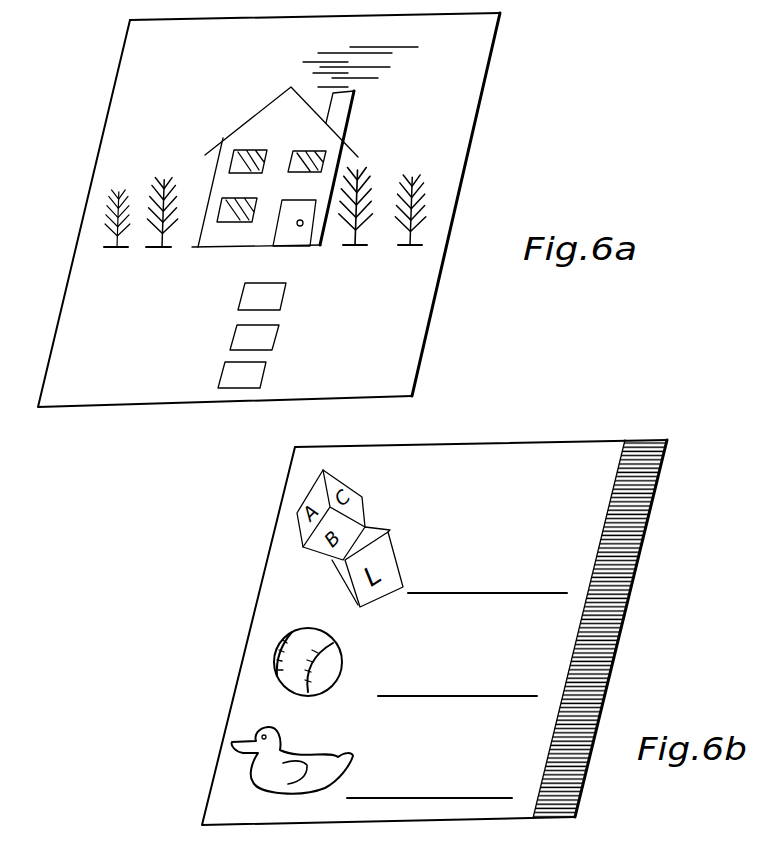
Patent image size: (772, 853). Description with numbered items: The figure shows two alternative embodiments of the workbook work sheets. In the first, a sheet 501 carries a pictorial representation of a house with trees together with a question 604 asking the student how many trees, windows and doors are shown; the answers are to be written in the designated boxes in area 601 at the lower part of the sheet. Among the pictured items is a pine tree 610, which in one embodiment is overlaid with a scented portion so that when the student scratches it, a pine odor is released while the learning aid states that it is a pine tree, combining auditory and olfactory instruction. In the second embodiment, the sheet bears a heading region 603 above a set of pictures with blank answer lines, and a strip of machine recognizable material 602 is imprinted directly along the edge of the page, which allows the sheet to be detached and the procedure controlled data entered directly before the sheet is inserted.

In FIG. 6A, the sheet 501 is at (478, 63).
In FIG. 6A, the pine tree 610 is at (442, 213).
In FIG. 6A, the question 604 is at (97, 265).
In FIG. 6A, the area 601 is at (255, 407).
In FIG. 6B, the heading area 603 is at (455, 437).
In FIG. 6B, the machine recognizable material 602 is at (640, 447).